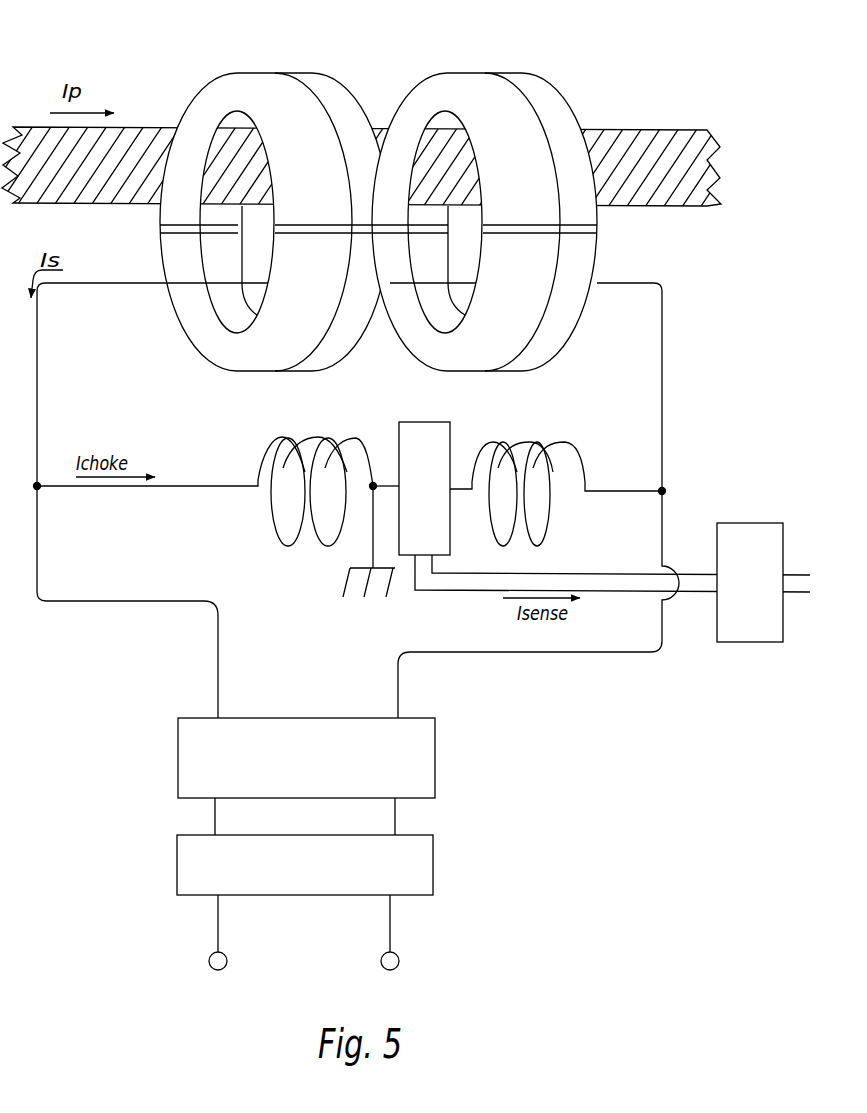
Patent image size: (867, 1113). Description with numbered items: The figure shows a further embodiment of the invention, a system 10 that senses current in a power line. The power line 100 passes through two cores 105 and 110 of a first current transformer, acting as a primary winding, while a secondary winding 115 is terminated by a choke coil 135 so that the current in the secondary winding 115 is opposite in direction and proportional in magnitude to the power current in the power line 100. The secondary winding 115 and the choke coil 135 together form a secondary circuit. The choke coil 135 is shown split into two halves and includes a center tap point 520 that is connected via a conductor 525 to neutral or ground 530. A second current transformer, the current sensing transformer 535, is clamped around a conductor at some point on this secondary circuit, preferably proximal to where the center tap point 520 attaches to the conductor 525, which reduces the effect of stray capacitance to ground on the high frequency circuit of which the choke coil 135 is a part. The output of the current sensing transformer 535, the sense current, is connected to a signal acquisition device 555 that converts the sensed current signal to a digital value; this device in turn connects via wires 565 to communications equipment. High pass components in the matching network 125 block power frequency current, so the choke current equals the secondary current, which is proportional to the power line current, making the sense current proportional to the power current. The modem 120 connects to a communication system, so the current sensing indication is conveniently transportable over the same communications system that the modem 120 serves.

The current sensor assembly 10 is at (401, 190).
The power line 100 is at (665, 130).
The core 105 is at (362, 92).
The core 110 is at (574, 100).
The secondary winding 115 is at (649, 284).
The modem 120 is at (442, 856).
The matching network 125 is at (442, 761).
The choke coil 135 is at (349, 478).
The center tap point 520 is at (369, 491).
The conductor 525 is at (367, 540).
The neutral or ground 530 is at (339, 589).
The current sensing transformer 535 is at (456, 544).
The signal acquisition device 555 is at (746, 518).
The wires 565 is at (795, 596).